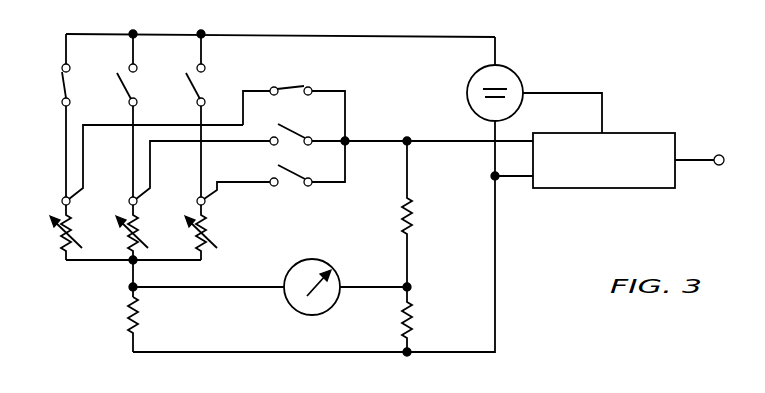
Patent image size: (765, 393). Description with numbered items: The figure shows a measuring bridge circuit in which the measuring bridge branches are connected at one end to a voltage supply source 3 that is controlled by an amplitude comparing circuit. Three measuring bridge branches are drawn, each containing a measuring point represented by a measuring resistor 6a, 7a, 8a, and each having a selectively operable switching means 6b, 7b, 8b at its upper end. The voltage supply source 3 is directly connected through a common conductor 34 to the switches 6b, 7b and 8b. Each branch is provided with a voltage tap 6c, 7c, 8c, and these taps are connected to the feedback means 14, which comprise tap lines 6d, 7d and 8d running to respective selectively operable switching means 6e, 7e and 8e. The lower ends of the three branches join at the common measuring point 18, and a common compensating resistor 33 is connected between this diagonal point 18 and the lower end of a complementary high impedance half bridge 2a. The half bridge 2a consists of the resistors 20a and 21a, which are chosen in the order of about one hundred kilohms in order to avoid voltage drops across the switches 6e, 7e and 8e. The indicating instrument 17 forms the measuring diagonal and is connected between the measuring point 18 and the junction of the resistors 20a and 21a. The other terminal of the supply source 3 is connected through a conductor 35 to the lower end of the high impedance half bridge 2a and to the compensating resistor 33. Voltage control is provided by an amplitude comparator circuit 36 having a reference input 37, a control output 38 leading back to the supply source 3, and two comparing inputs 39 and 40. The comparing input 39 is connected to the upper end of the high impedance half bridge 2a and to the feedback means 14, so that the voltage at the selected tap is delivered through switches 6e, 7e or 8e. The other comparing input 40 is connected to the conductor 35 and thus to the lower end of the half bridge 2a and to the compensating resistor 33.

The voltage supply source 3 is at (503, 65).
The feedback means 14 is at (326, 118).
The indicating instrument 17 is at (308, 258).
The common measuring point 18 is at (128, 268).
The complementary high impedance half bridge 2a is at (440, 246).
The resistor 20a is at (413, 220).
The resistor 21a is at (413, 315).
The common compensating resistor 33 is at (125, 317).
The common conductor 34 is at (374, 35).
The conductor 35 is at (497, 300).
The amplitude comparator circuit 36 is at (637, 136).
The reference input 37 is at (720, 154).
The control output 38 is at (555, 92).
The comparing input 39 is at (463, 138).
The comparing input 40 is at (515, 181).
The measuring resistor 6a is at (62, 242).
The selectively operable switching means 6b is at (62, 79).
The voltage tap 6c is at (62, 196).
The tap line 6d is at (122, 128).
The selectively operable switching means 6e is at (292, 88).
The measuring resistor 7a is at (127, 231).
The selectively operable switching means 7b is at (132, 87).
The voltage tap 7c is at (129, 199).
The tap line 7d is at (190, 142).
The selectively operable switching means 7e is at (296, 136).
The measuring resistor 8a is at (205, 226).
The selectively operable switching means 8b is at (202, 88).
The voltage tap 8c is at (205, 203).
The tap line 8d is at (248, 180).
The selectively operable switching means 8e is at (296, 177).